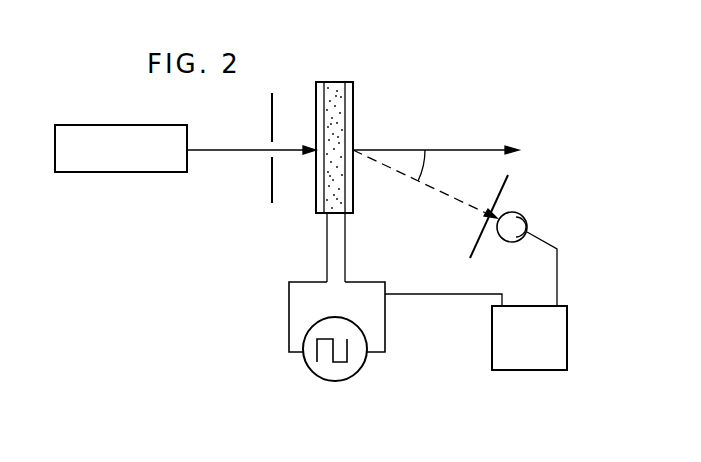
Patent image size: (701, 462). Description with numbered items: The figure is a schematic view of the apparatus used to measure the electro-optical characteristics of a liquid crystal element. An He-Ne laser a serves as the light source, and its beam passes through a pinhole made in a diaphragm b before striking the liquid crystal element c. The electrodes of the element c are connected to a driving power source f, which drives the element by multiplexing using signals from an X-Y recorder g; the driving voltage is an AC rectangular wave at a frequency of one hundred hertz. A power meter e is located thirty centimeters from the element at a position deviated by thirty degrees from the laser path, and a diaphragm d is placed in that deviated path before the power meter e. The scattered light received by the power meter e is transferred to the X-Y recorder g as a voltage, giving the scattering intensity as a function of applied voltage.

The He-Ne laser a is at (137, 172).
The diaphragm b is at (271, 160).
The liquid crystal element c is at (329, 82).
The diaphragm d is at (481, 224).
The power meter e is at (520, 241).
The driving power source f is at (348, 381).
The X-Y recorder g is at (538, 370).